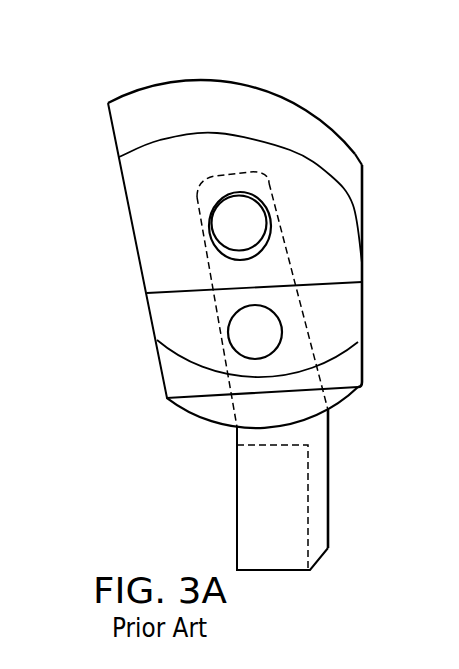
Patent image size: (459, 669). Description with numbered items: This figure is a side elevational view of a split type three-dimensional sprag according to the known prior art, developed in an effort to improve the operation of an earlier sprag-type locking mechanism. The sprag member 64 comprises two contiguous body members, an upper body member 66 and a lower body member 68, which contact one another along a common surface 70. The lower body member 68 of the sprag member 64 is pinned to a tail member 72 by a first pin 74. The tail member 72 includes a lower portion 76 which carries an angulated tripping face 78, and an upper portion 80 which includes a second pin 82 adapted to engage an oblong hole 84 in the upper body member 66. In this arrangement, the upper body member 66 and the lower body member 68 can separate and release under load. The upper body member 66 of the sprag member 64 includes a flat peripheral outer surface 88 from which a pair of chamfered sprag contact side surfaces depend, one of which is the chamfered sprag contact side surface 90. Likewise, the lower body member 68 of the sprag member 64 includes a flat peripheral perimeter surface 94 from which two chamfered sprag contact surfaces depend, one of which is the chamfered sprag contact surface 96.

The sprag member 64 is at (322, 92).
The upper body member 66 is at (338, 262).
The lower body member 68 is at (342, 320).
The common surface 70 is at (172, 290).
The tail member 72 is at (320, 433).
The first pin 74 is at (230, 330).
The lower portion 76 is at (323, 510).
The angulated tripping face 78 is at (247, 488).
The upper portion 80 is at (273, 249).
The second pin 82 is at (219, 222).
The oblong hole 84 is at (235, 190).
The flat peripheral outer surface 88 is at (252, 85).
The chamfered sprag contact side surface 90 is at (180, 97).
The flat peripheral perimeter surface 94 is at (183, 412).
The chamfered sprag contact surface 96 is at (167, 380).